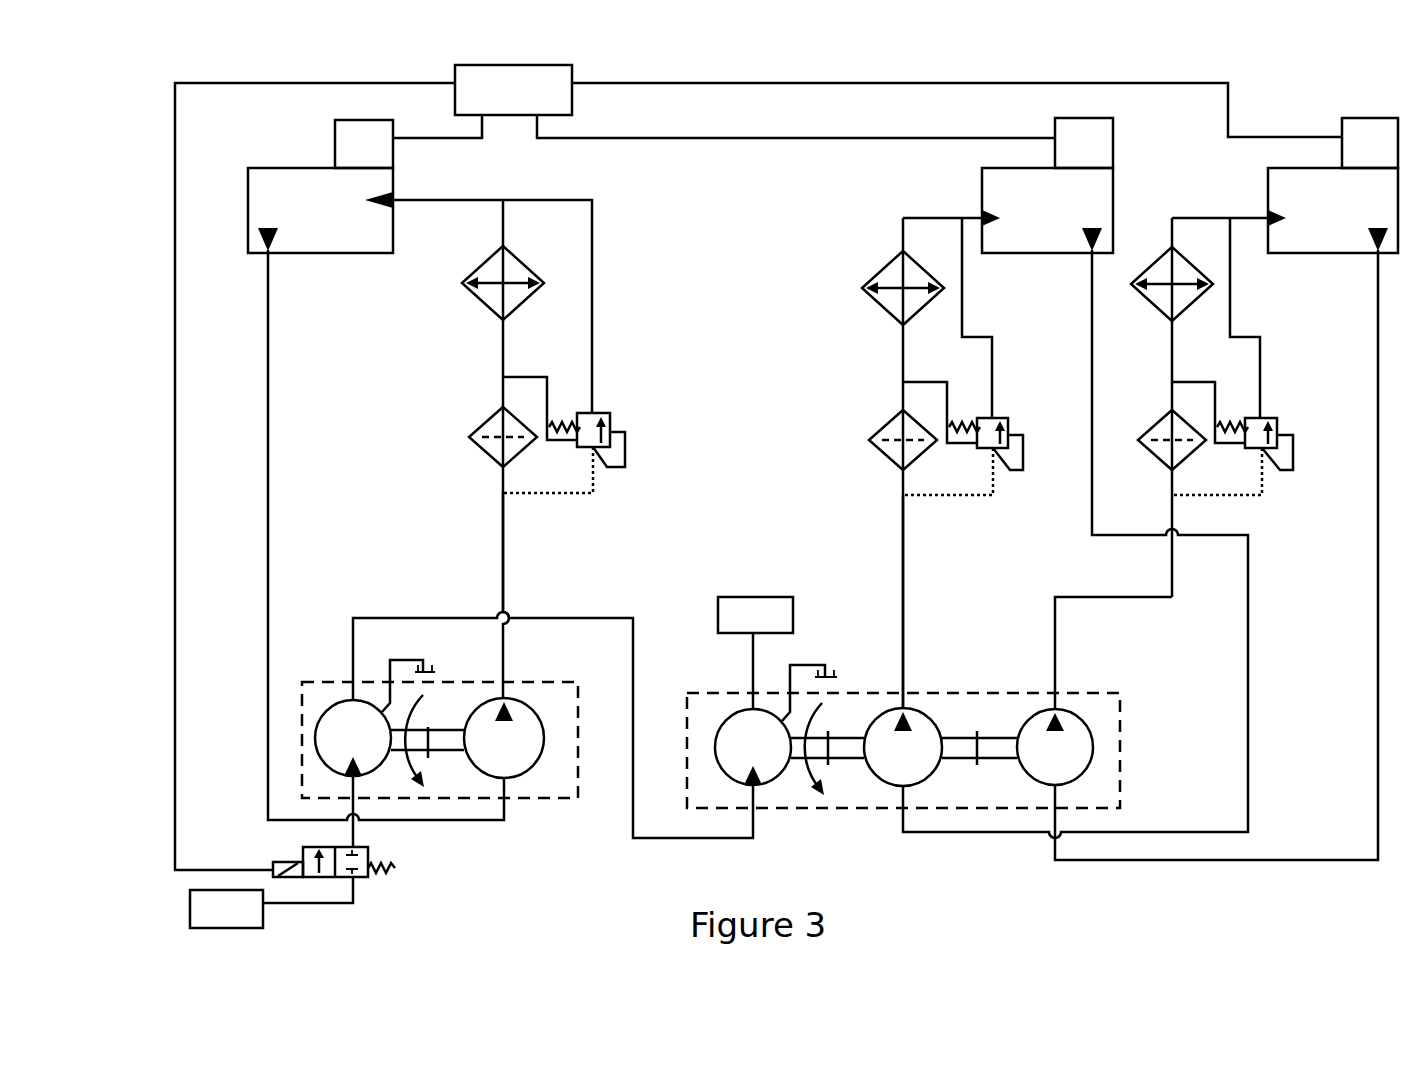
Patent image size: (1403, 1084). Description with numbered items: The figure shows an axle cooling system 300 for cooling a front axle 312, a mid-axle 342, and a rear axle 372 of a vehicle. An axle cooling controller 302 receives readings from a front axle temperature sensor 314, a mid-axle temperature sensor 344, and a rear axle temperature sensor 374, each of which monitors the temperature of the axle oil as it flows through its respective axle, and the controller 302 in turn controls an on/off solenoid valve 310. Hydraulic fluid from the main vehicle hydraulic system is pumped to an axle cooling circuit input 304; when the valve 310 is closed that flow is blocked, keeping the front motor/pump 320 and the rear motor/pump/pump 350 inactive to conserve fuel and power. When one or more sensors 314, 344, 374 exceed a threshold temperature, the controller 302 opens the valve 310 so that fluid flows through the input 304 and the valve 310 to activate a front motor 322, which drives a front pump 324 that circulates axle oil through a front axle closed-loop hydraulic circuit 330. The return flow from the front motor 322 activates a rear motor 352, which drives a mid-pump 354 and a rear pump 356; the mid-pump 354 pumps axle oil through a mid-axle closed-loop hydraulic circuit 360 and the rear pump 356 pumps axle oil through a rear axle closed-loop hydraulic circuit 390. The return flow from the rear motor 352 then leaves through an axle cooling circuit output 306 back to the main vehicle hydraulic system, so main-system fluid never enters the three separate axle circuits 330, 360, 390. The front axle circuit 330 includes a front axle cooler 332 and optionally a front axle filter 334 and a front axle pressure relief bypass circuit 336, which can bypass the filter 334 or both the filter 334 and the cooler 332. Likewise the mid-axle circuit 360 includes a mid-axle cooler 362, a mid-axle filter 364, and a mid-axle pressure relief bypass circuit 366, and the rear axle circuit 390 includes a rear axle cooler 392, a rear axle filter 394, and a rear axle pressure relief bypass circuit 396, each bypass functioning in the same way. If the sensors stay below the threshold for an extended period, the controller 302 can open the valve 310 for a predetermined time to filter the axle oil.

The axle cooling system 300 is at (953, 897).
The axle cooling controller 302 is at (572, 103).
The axle cooling circuit input 304 is at (271, 902).
The axle cooling circuit output 306 is at (755, 653).
The on/off solenoid valve 310 is at (368, 878).
The front axle 312 is at (248, 207).
The front axle temperature sensor 314 is at (333, 147).
The front motor/pump 320 is at (547, 682).
The front motor 322 is at (335, 705).
The front pump 324 is at (525, 776).
The front axle closed-loop hydraulic circuit 330 is at (503, 548).
The front axle cooler 332 is at (485, 262).
The front axle filter 334 is at (485, 420).
The front axle pressure relief bypass circuit 336 is at (612, 399).
The mid-axle 342 is at (982, 198).
The mid-axle temperature sensor 344 is at (1115, 142).
The rear motor/pump/pump 350 is at (1105, 693).
The rear motor 352 is at (727, 723).
The mid-pump 354 is at (880, 780).
The rear pump 356 is at (1022, 725).
The mid-axle closed-loop hydraulic circuit 360 is at (903, 578).
The mid-axle cooler 362 is at (883, 272).
The mid-axle filter 364 is at (887, 423).
The mid-axle pressure relief bypass circuit 366 is at (1016, 400).
The rear axle 372 is at (1268, 198).
The rear axle temperature sensor 374 is at (1342, 123).
The rear axle closed-loop hydraulic circuit 390 is at (1052, 637).
The rear axle cooler 392 is at (1160, 302).
The rear axle filter 394 is at (1155, 423).
The rear axle pressure relief bypass circuit 396 is at (1279, 400).